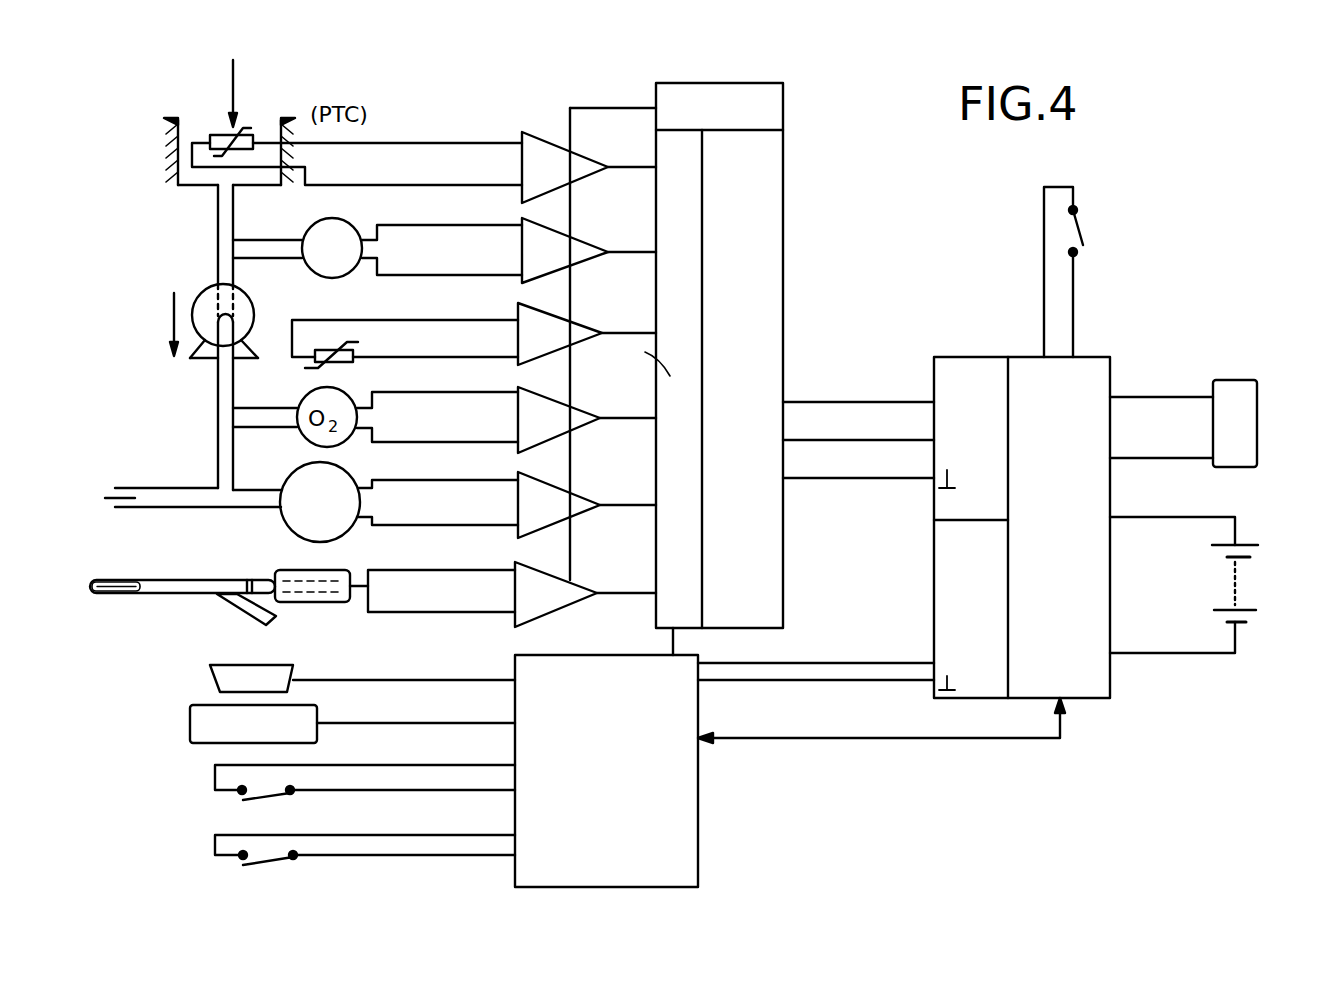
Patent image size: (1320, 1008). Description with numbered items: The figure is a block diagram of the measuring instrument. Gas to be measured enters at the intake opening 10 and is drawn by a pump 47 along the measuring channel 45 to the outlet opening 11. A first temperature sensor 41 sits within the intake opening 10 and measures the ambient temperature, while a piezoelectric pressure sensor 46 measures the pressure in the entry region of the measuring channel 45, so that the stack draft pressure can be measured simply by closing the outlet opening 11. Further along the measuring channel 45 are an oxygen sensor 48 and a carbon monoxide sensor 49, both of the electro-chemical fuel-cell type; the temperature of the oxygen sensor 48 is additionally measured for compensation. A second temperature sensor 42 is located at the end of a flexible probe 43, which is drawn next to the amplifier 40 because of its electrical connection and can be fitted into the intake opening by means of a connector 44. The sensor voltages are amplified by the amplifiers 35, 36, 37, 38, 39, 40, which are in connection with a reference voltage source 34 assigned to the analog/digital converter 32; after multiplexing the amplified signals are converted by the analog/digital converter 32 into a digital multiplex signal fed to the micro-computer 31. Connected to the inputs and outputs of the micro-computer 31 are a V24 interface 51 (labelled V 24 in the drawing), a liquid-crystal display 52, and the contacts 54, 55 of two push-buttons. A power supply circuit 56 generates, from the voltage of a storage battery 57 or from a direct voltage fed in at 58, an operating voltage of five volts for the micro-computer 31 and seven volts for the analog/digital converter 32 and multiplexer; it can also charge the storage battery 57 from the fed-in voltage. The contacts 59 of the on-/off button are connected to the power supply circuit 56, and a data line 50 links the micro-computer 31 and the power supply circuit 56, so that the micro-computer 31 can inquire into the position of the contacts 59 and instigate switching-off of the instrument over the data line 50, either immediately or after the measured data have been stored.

The intake opening 10 is at (250, 93).
The outlet opening 11 is at (193, 517).
The V.24 serial interface 24 is at (208, 677).
The micro-computer 31 is at (724, 755).
The analog/digital converter 32 is at (763, 369).
The reference voltage source 34 is at (741, 115).
The amplifier 35 is at (589, 165).
The amplifier 36 is at (589, 247).
The amplifier 37 is at (587, 331).
The amplifier 38 is at (587, 415).
The amplifier 39 is at (587, 500).
The amplifier 40 is at (585, 590).
The first temperature sensor 41 is at (343, 143).
The second temperature sensor 42 is at (110, 594).
The flexible probe 43 is at (302, 595).
The connector 44 is at (283, 602).
The measuring channel 45 is at (204, 337).
The piezoelectric pressure sensor 46 is at (377, 233).
The pump 47 is at (185, 317).
The oxygen sensor 48 is at (405, 354).
The carbon monoxide sensor 49 is at (375, 495).
The data line 50 is at (881, 735).
The V24 interface 51 is at (362, 670).
The liquid-crystal display 52 is at (352, 716).
The contact 54 is at (365, 782).
The contact 55 is at (365, 865).
The power supply circuit 56 is at (1032, 514).
The storage battery 57 is at (1191, 580).
The direct voltage input 58 is at (1197, 408).
The contacts of the on-/off button 59 is at (1139, 272).